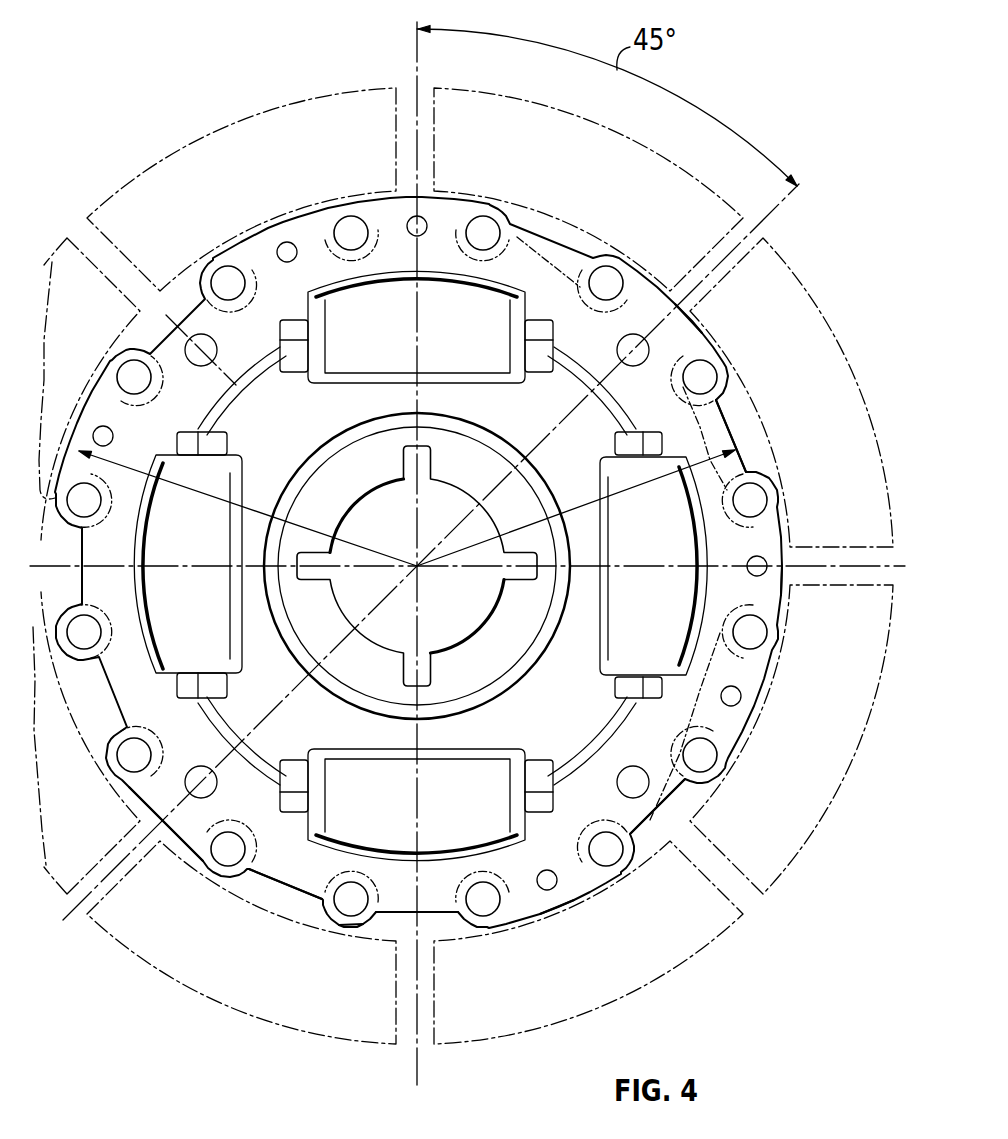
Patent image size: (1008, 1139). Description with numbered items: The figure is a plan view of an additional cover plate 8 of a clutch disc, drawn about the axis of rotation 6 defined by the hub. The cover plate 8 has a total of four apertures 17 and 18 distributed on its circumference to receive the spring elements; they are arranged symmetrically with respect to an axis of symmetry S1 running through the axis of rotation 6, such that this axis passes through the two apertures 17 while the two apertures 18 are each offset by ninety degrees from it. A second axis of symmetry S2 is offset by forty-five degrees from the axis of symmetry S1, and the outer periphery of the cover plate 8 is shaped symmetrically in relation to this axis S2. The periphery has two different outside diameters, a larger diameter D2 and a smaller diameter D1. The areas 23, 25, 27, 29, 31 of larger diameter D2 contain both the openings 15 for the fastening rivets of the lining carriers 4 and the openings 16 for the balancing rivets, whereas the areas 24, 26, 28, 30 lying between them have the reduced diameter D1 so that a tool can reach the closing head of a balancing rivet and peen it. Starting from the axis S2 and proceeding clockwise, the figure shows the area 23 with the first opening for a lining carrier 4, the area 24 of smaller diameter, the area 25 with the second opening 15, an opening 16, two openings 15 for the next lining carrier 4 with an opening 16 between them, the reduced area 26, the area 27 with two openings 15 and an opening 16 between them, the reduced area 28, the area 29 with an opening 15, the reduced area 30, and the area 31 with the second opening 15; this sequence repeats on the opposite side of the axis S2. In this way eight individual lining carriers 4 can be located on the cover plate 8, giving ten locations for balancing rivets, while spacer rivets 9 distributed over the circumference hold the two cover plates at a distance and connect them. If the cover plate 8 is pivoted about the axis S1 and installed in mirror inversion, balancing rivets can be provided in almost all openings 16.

The lining carriers 4 is at (176, 168).
The axis of rotation 6 is at (422, 572).
The cover plate 8 is at (150, 792).
The spacer rivets 9 is at (212, 788).
The openings for the fastening rivets 15 is at (706, 378).
The openings for the balancing rivets 16 is at (752, 570).
The apertures 17 is at (492, 300).
The apertures 18 is at (165, 655).
The area with larger diameter 23 is at (700, 333).
The area with smaller diameter 24 is at (729, 421).
The area with larger diameter 25 is at (787, 590).
The area with reduced diameter 26 is at (675, 796).
The area with larger diameter 27 is at (572, 935).
The area with reduced diameter 28 is at (421, 913).
The area with larger diameter 29 is at (356, 927).
The area with reduced diameter 30 is at (300, 893).
The area with larger diameter 31 is at (160, 838).
The smaller diameter D1 is at (607, 498).
The larger diameter D2 is at (207, 495).
The axis of symmetry S1 is at (412, 66).
The second axis of symmetry S2 is at (778, 206).